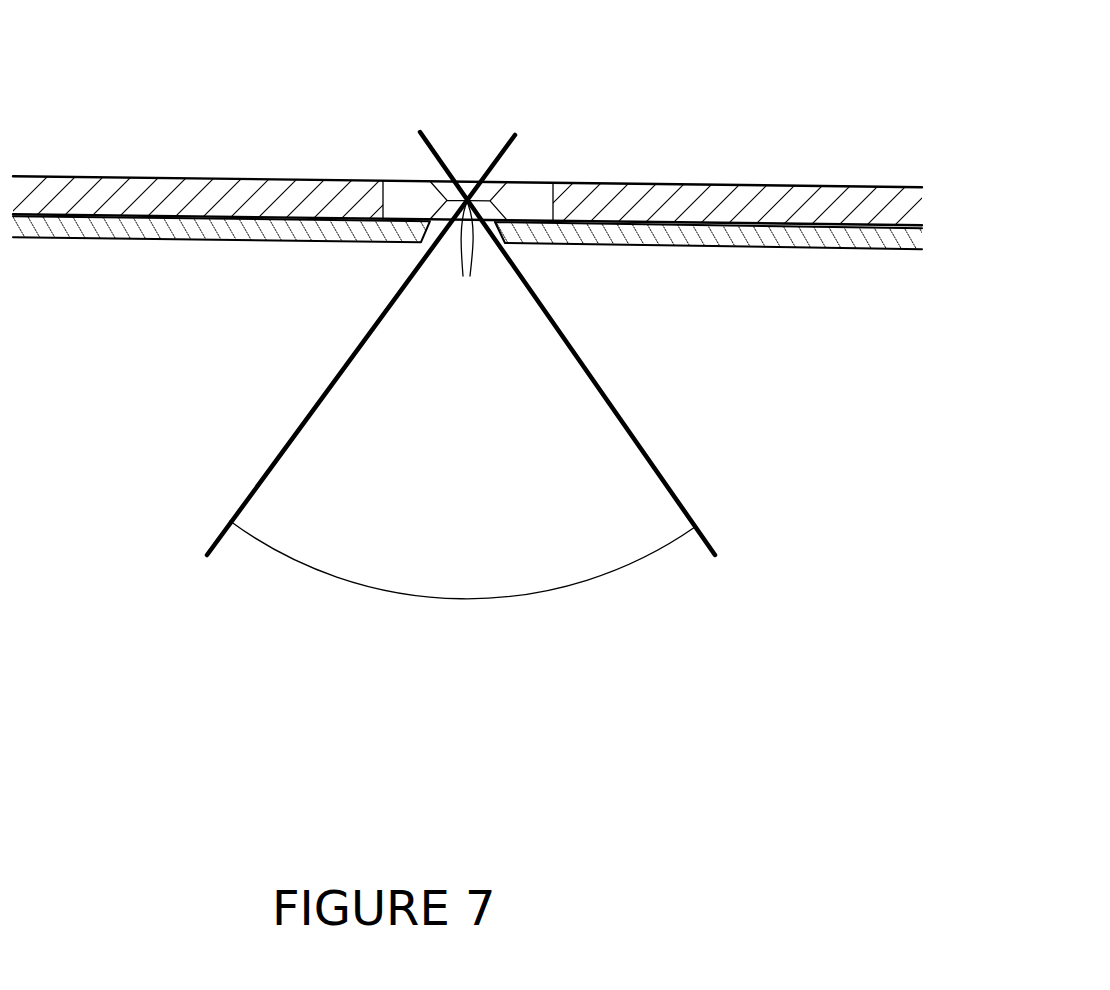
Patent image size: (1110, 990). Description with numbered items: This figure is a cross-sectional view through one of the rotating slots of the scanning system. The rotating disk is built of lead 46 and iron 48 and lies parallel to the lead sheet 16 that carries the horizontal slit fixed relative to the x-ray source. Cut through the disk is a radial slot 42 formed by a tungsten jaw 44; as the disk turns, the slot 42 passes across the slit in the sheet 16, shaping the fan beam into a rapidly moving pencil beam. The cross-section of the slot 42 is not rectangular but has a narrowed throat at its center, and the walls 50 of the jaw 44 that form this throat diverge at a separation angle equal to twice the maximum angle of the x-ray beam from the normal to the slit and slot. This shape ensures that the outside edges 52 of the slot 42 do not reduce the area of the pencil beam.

The lead sheet 16 is at (503, 191).
The radial slot 42 is at (472, 136).
The tungsten jaw 44 is at (400, 180).
The lead 46 is at (140, 177).
The iron 48 is at (180, 240).
The walls of the jaw 50 is at (464, 256).
The outside edges of the slot 52 is at (460, 180).